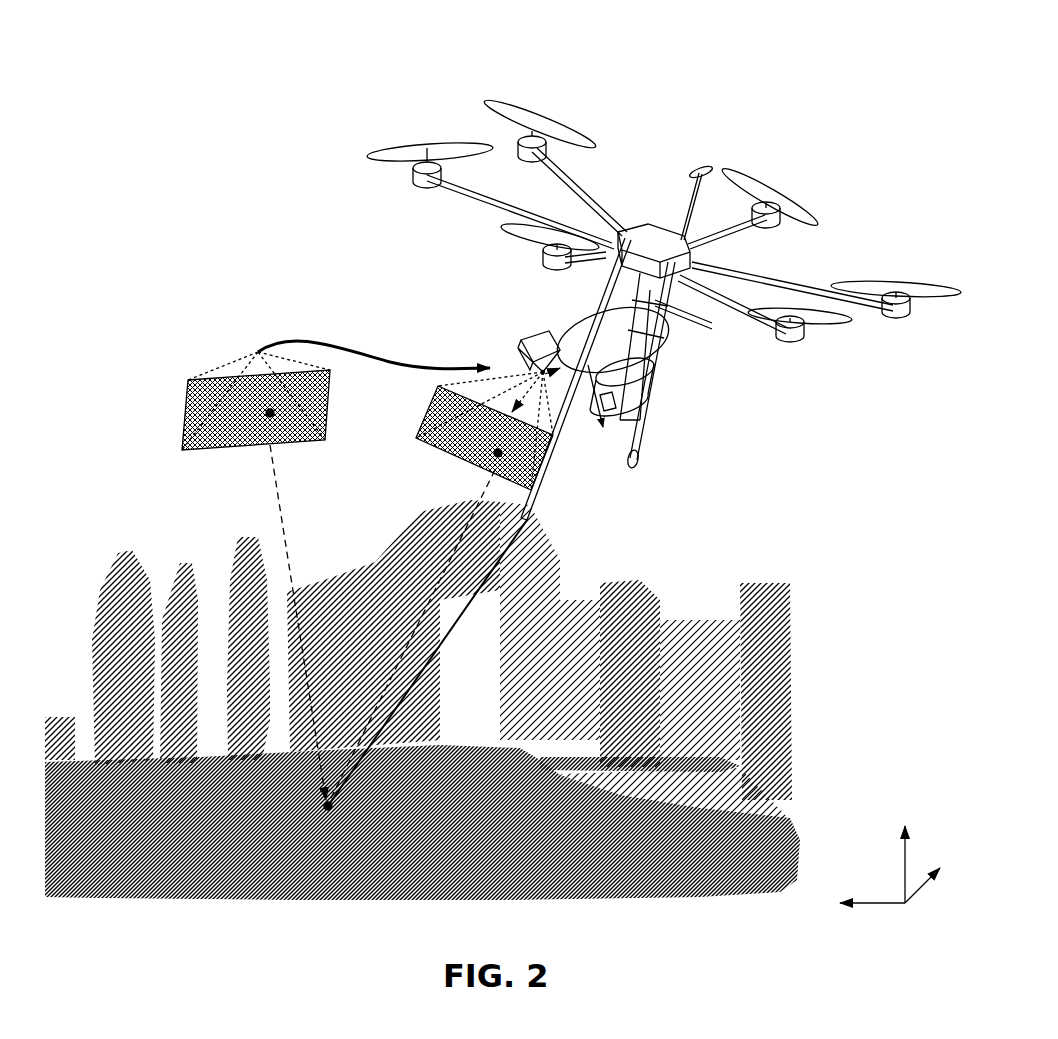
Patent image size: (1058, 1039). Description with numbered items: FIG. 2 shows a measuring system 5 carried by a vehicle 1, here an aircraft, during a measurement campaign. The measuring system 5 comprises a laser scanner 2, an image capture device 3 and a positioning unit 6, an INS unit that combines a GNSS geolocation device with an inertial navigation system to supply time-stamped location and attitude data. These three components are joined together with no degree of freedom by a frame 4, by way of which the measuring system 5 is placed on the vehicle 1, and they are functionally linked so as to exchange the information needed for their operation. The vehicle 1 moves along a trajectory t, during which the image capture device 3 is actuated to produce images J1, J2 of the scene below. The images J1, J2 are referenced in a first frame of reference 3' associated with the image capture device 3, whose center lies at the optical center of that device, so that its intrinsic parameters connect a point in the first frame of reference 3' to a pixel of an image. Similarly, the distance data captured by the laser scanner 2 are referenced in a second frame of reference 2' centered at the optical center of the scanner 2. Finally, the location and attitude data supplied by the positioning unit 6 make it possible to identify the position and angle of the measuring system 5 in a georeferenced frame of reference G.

The vehicle 1 is at (775, 133).
The laser scanner 2 is at (622, 379).
The second frame of reference 2' is at (659, 374).
The image capture device 3 is at (505, 312).
The first frame of reference 3' is at (477, 334).
The frame 4 is at (668, 347).
The measuring system 5 is at (666, 360).
The positioning unit 6 is at (607, 418).
The trajectory t is at (374, 350).
The first image J1 is at (183, 426).
The second image J2 is at (415, 438).
The georeferenced frame of reference G is at (905, 857).